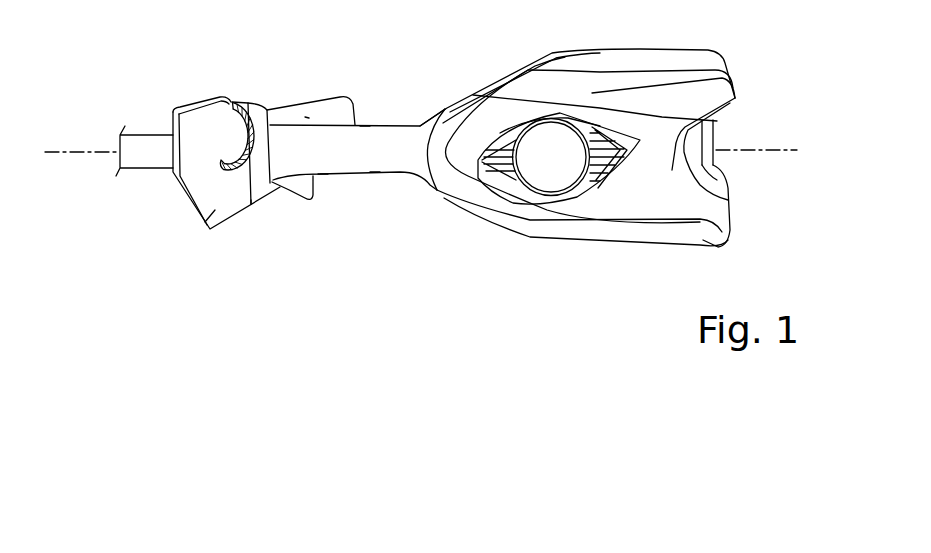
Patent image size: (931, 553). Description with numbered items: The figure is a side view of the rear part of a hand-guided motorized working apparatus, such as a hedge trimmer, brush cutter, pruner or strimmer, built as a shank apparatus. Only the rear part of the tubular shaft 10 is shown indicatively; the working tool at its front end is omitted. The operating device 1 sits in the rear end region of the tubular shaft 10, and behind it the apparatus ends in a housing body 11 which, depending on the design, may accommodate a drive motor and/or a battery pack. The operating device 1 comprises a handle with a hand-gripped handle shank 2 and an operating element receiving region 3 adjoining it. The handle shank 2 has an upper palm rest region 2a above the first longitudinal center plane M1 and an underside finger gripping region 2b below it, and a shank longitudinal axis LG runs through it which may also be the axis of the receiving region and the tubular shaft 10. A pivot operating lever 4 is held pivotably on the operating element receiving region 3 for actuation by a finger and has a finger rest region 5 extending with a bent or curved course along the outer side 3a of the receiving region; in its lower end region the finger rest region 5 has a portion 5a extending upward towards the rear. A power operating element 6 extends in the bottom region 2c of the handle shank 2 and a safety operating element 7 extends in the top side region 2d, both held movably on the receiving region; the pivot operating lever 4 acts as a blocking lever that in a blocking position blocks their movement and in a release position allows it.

The first longitudinal center plane M1 is at (90, 150).
The shank longitudinal axis LG is at (71, 152).
The operating device 1 is at (245, 287).
The handle shank 2 is at (390, 120).
The upper palm rest region 2a is at (365, 135).
The underside finger gripping region 2b is at (375, 157).
The bottom region 2c is at (323, 183).
The top side region 2d is at (322, 110).
The operating element receiving region 3 is at (187, 190).
The outer side 3a is at (217, 210).
The pivot operating lever 4 is at (238, 107).
The finger rest region 5 is at (265, 120).
The portion extending upward towards the rear 5a is at (250, 193).
The power operating element 6 is at (300, 192).
The safety operating element 7 is at (308, 117).
The tubular shaft 10 is at (145, 165).
The housing body 11 is at (600, 227).